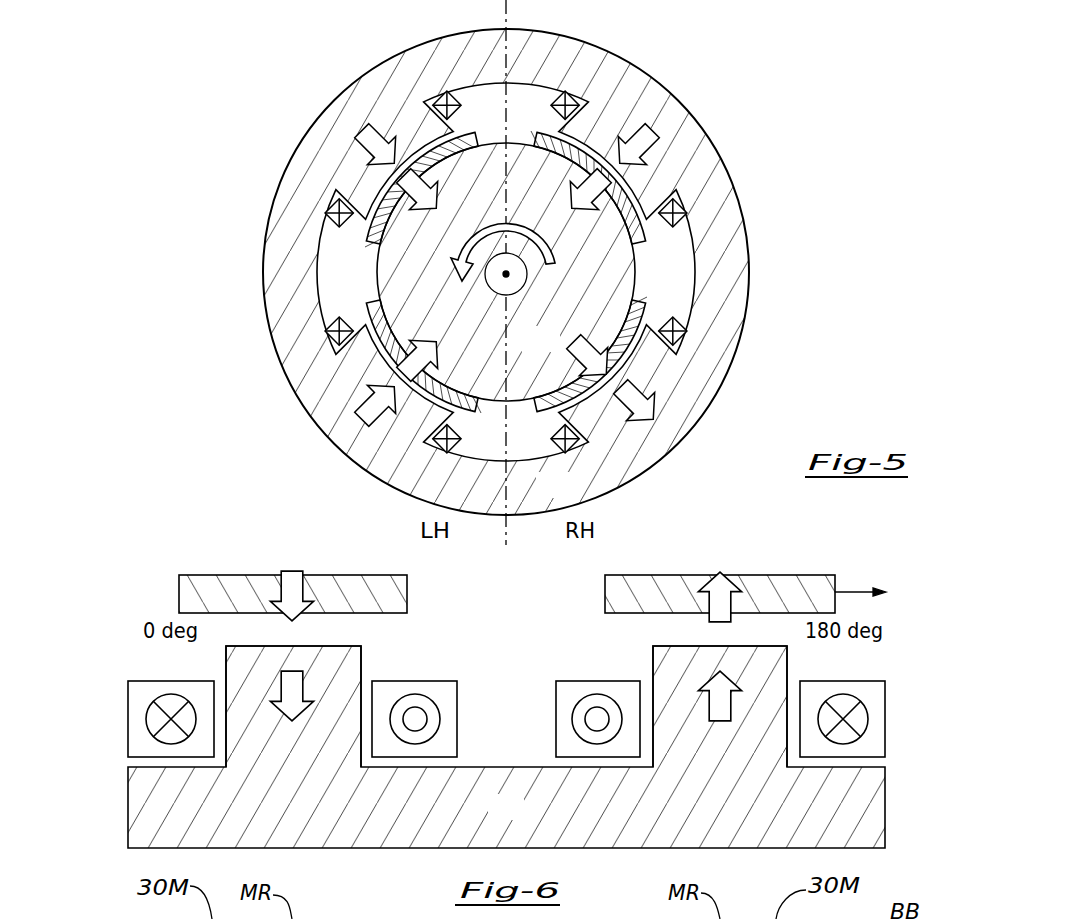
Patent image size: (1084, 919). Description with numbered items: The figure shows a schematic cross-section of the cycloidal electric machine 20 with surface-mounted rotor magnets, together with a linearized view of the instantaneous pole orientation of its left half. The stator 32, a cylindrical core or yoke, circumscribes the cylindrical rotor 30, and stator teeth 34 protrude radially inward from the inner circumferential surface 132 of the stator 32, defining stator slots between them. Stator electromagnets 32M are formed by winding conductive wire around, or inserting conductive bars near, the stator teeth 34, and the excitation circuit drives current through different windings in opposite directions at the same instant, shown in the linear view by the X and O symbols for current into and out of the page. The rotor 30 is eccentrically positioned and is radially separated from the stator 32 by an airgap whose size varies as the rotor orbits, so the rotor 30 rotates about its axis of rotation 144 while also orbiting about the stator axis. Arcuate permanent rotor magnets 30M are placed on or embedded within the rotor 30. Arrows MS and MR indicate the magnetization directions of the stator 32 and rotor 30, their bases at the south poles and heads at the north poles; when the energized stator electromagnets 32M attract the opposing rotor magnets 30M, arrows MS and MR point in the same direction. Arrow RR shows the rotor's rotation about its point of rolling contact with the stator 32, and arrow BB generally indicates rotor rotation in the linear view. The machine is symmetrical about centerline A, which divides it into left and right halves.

In FIG. 5, the cycloidal electric machine 20 is at (732, 58).
In FIG. 5, the rotor 30 is at (551, 348).
In FIG. 5, the rotor magnets 30M is at (372, 253).
In FIG. 6, the rotor magnets 30M is at (212, 575).
In FIG. 5, the stator 32 is at (564, 495).
In FIG. 6, the stator 32 is at (514, 818).
In FIG. 5, the stator electromagnets 32M is at (442, 98).
In FIG. 6, the stator electromagnets 32M is at (128, 705).
In FIG. 5, the inner circumferential surface 132 is at (556, 92).
In FIG. 5, the stator teeth 34 is at (678, 172).
In FIG. 6, the stator teeth 34 is at (352, 672).
In FIG. 5, the axis of rotation 144 is at (522, 284).
In FIG. 5, the rotor magnetization direction arrow MR is at (400, 347).
In FIG. 6, the rotor magnetization direction arrow MR is at (292, 570).
In FIG. 5, the stator magnetization direction arrow MS is at (360, 140).
In FIG. 6, the stator magnetization direction arrow MS is at (282, 688).
In FIG. 5, the rotor rotation direction arrow RR is at (553, 239).
In FIG. 5, the centerline A is at (506, 527).
In FIG. 6, the rotor rotation arrow BB is at (850, 592).